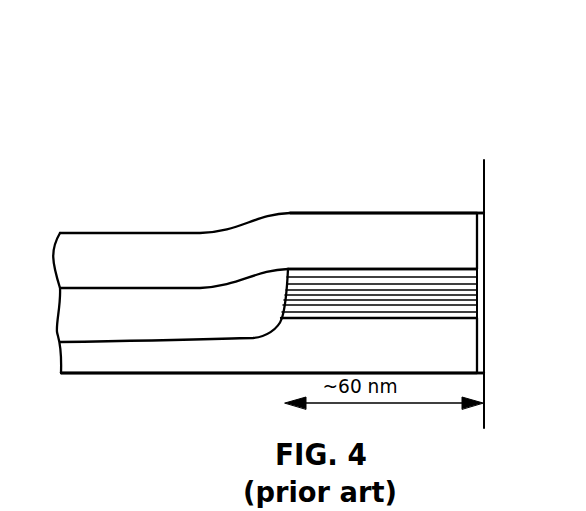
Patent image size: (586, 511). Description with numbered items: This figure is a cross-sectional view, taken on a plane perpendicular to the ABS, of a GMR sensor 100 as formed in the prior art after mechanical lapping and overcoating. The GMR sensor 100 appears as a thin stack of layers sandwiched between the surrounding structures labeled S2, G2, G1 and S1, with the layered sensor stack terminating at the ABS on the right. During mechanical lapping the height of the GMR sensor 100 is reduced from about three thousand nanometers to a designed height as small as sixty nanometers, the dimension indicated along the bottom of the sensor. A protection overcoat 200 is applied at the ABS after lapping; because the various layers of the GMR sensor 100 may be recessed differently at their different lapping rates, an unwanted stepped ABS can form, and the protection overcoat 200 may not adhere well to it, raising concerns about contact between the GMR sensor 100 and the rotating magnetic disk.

The GMR sensor 100 is at (318, 198).
The protection overcoat 200 is at (485, 270).
The air bearing surface ABS is at (492, 279).
The second shield S2 is at (387, 201).
The second gap layer G2 is at (382, 241).
The first gap layer G1 is at (269, 345).
The first shield S1 is at (272, 386).